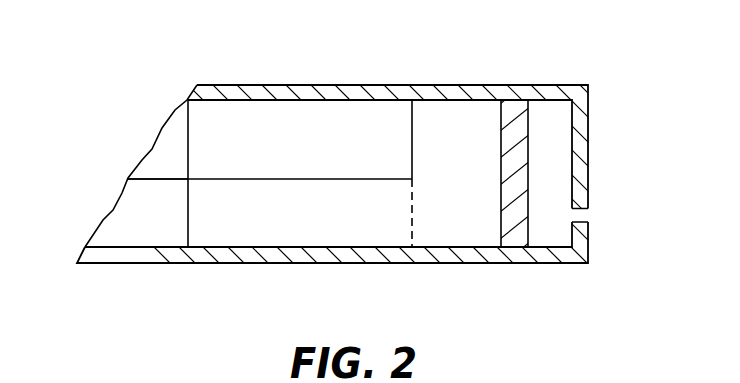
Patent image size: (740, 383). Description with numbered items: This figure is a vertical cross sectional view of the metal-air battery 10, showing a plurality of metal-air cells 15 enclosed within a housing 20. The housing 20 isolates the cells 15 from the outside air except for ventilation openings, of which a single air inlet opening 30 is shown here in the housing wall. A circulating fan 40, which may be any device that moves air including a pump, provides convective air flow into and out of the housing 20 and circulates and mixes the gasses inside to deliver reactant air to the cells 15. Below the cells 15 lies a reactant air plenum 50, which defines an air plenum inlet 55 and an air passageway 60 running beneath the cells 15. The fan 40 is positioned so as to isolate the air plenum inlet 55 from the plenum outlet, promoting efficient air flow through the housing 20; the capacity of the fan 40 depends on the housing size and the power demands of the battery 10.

The metal-air battery 10 is at (180, 72).
The metal-air cells 15 is at (307, 156).
The housing 20 is at (403, 265).
The air inlet opening 30 is at (588, 215).
The circulating fan 40 is at (500, 140).
The reactant air plenum 50 is at (133, 225).
The air plenum inlet 55 is at (415, 222).
The air passageway 60 is at (307, 241).